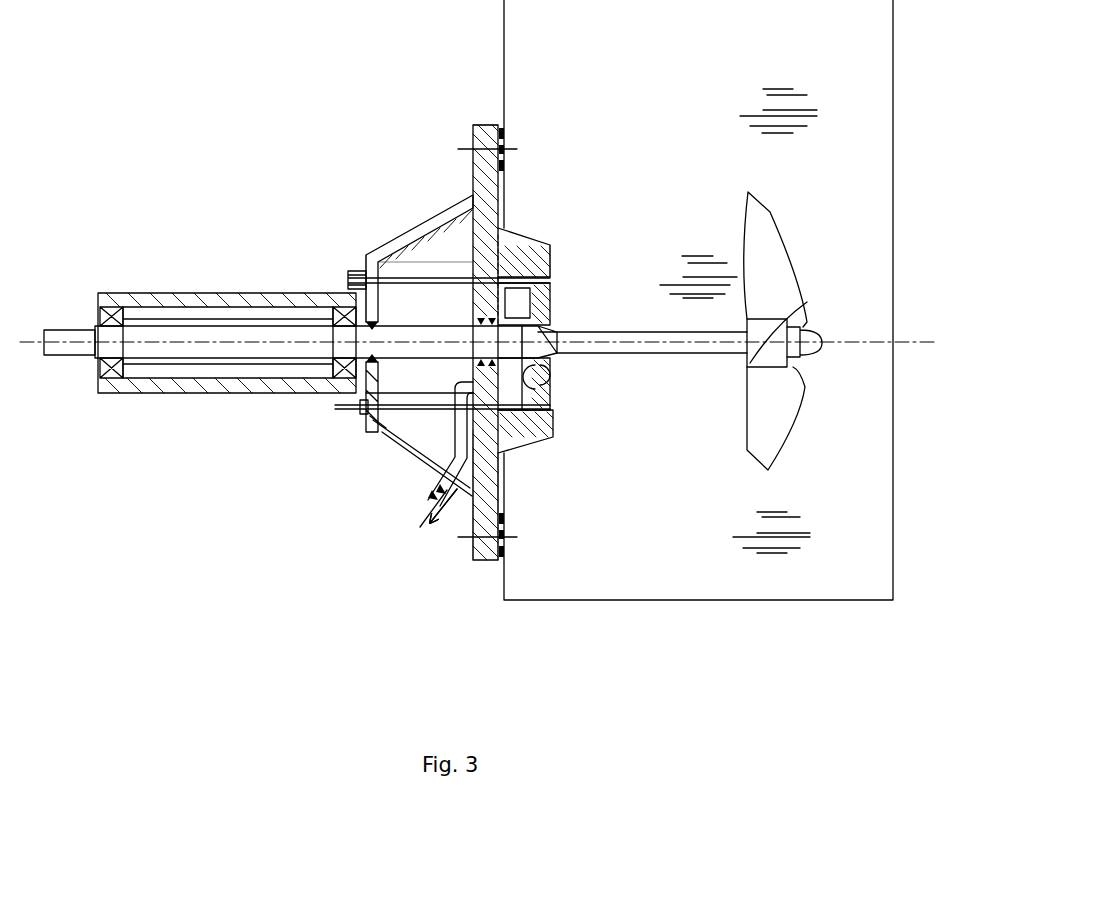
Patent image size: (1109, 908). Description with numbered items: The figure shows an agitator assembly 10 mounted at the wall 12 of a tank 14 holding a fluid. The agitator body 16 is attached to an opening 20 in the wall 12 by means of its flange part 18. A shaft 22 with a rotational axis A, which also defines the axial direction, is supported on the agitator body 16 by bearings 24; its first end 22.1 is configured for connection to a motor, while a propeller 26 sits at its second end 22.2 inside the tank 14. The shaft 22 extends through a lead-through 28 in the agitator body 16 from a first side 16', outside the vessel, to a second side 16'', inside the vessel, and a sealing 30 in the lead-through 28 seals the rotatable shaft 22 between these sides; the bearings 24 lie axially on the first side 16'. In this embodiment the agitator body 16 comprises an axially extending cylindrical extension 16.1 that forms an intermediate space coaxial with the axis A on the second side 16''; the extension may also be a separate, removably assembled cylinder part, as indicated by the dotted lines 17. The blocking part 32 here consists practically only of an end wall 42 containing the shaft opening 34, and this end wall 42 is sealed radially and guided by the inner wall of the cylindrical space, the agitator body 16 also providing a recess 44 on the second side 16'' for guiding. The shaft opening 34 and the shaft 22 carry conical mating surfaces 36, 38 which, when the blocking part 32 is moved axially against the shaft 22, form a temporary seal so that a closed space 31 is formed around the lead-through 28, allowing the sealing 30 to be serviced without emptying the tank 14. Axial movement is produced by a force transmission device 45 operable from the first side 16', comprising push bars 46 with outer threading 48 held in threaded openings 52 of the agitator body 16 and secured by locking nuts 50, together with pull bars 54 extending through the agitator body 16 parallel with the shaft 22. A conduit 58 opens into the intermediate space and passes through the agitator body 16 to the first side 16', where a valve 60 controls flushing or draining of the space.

The agitator assembly 10 is at (410, 150).
The wall 12 is at (504, 108).
The tank 14 is at (704, 243).
The agitator body 16 is at (468, 297).
The first side 16' is at (381, 224).
The second side 16'' is at (590, 202).
The cylindrical extension 16.1 is at (540, 255).
The dotted lines 17 is at (512, 232).
The flange part 18 is at (473, 160).
The opening 20 is at (508, 498).
The shaft 22 is at (180, 325).
The first end 22.1 is at (60, 330).
The second end 22.2 is at (738, 370).
The bearings 24 is at (125, 300).
The propeller 26 is at (782, 288).
The lead-through 28 is at (557, 315).
The sealing 30 is at (467, 320).
The closed space 31 is at (510, 320).
The blocking part 32 is at (553, 420).
The shaft opening 34 is at (563, 330).
The mating surface 36 is at (553, 347).
The mating surface 38 is at (556, 382).
The end wall 42 is at (585, 362).
The recess 44 is at (504, 495).
The force transmission device 45 is at (318, 277).
The push bars 46 is at (427, 455).
The outer threading 48 is at (377, 447).
The locking nut 50 is at (358, 415).
The threaded opening 52 is at (373, 437).
The pull bars 54 is at (395, 245).
The conduit 58 is at (455, 445).
The valve 60 is at (448, 508).
The rotational axis A is at (830, 342).